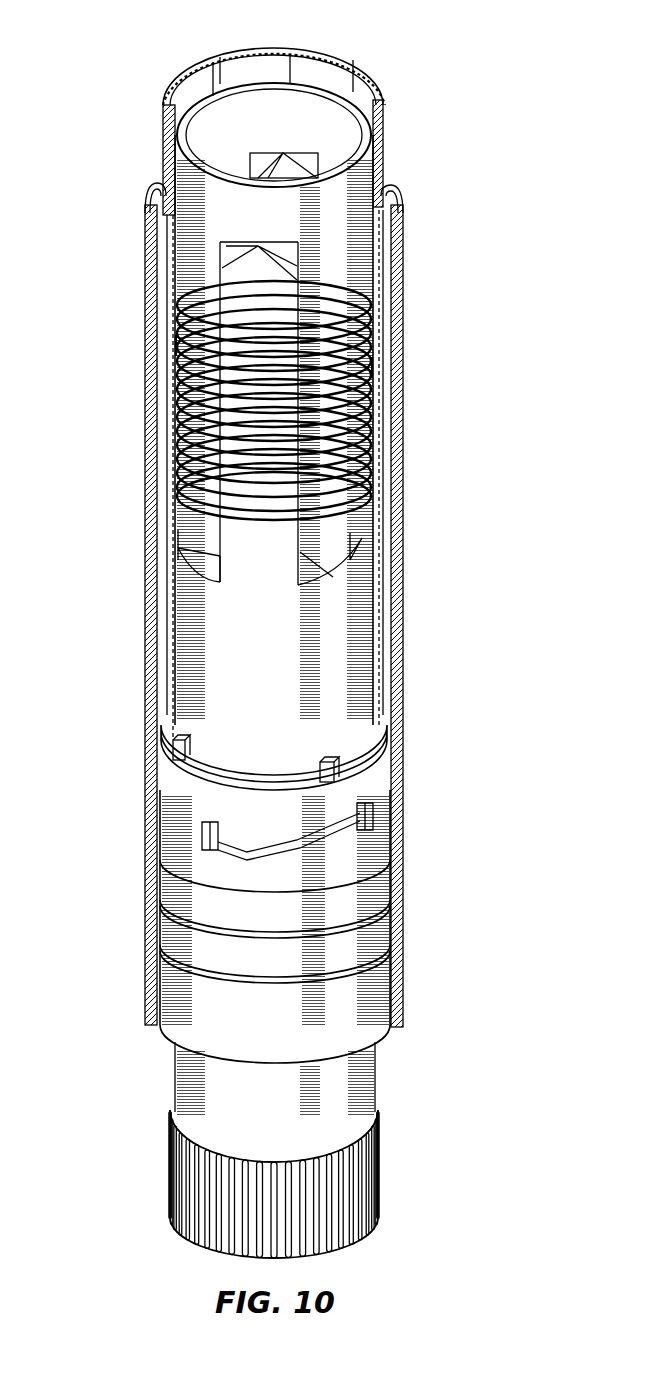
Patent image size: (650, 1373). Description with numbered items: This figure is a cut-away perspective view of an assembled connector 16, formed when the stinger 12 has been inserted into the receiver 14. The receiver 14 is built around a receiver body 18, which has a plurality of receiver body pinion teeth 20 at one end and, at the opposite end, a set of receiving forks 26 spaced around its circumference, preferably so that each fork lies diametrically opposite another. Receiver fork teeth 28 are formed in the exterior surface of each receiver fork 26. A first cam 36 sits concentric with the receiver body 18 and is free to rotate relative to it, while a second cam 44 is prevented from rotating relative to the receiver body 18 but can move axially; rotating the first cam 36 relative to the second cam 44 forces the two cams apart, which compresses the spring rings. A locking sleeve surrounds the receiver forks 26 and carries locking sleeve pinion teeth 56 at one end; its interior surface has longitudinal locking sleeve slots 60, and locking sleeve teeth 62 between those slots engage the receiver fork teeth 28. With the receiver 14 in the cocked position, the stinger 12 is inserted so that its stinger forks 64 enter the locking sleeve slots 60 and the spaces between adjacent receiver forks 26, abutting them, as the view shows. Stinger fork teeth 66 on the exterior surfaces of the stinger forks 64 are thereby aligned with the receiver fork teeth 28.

The stinger 12 is at (195, 245).
The receiver 14 is at (129, 611).
The connector 16 is at (424, 611).
The receiver body 18 is at (193, 697).
The receiver body pinion teeth 20 is at (197, 1190).
The receiving forks 26 is at (245, 298).
The receiver fork teeth 28 is at (378, 327).
The first cam 36 is at (172, 765).
The second cam 44 is at (175, 825).
The locking sleeve pinion teeth 56 is at (178, 83).
The locking sleeve slots 60 is at (248, 60).
The locking sleeve teeth 62 is at (170, 345).
The stinger forks 64 is at (193, 523).
The stinger fork teeth 66 is at (378, 367).